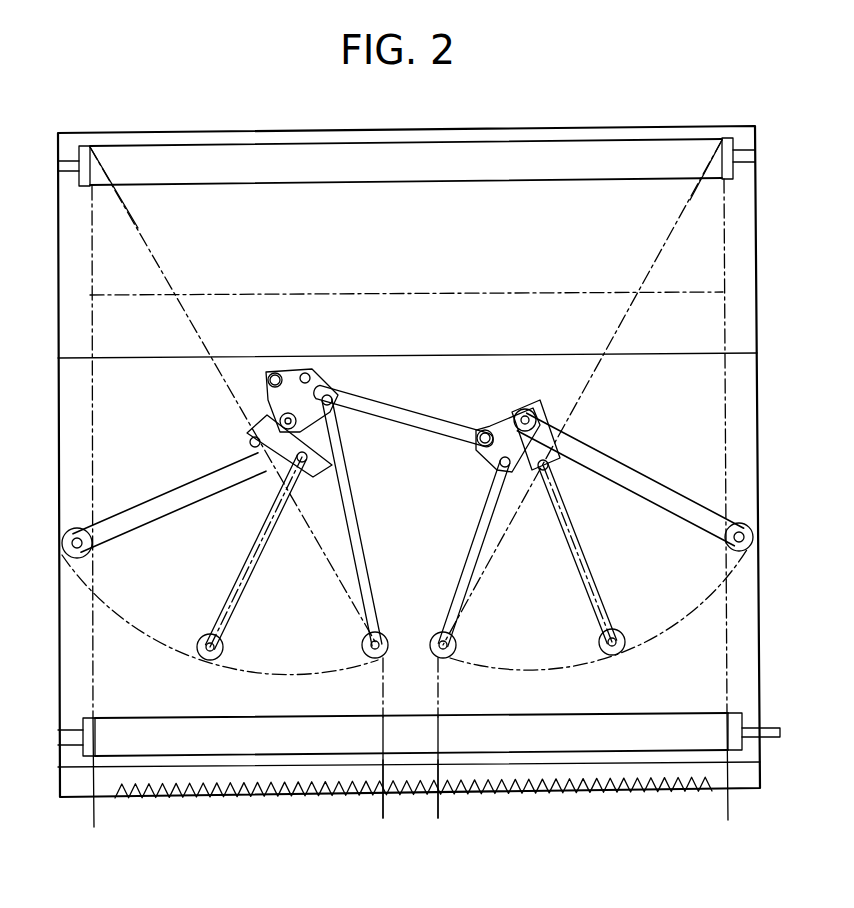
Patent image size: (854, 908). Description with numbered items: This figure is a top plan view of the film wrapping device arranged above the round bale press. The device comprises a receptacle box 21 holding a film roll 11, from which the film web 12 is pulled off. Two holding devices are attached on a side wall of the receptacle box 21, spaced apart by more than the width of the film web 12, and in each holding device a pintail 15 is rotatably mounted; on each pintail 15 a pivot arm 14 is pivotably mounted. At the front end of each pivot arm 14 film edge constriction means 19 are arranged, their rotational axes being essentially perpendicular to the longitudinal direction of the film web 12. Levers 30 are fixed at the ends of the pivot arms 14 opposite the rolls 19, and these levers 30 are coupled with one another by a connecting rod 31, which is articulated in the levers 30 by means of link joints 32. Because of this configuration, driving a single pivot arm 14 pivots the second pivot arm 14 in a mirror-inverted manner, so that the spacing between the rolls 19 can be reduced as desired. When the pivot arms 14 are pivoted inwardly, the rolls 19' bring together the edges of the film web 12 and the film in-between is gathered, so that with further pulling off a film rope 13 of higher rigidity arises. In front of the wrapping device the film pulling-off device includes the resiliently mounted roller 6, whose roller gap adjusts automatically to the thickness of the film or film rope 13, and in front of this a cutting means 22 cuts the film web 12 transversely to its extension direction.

The roller 6 is at (735, 724).
The film roll 11 is at (700, 291).
The film web 12 is at (660, 261).
The film rope 13 is at (420, 802).
The pivot arm 14 is at (637, 478).
The pintail 15 is at (530, 407).
The film edge constriction means 19 is at (408, 543).
The rolls in inwardly pivoted position 19' is at (410, 641).
The receptacle box 21 is at (700, 339).
The cutting means 22 is at (658, 787).
The lever 30 is at (493, 427).
The connecting rod 31 is at (407, 410).
The link joint 32 is at (482, 450).